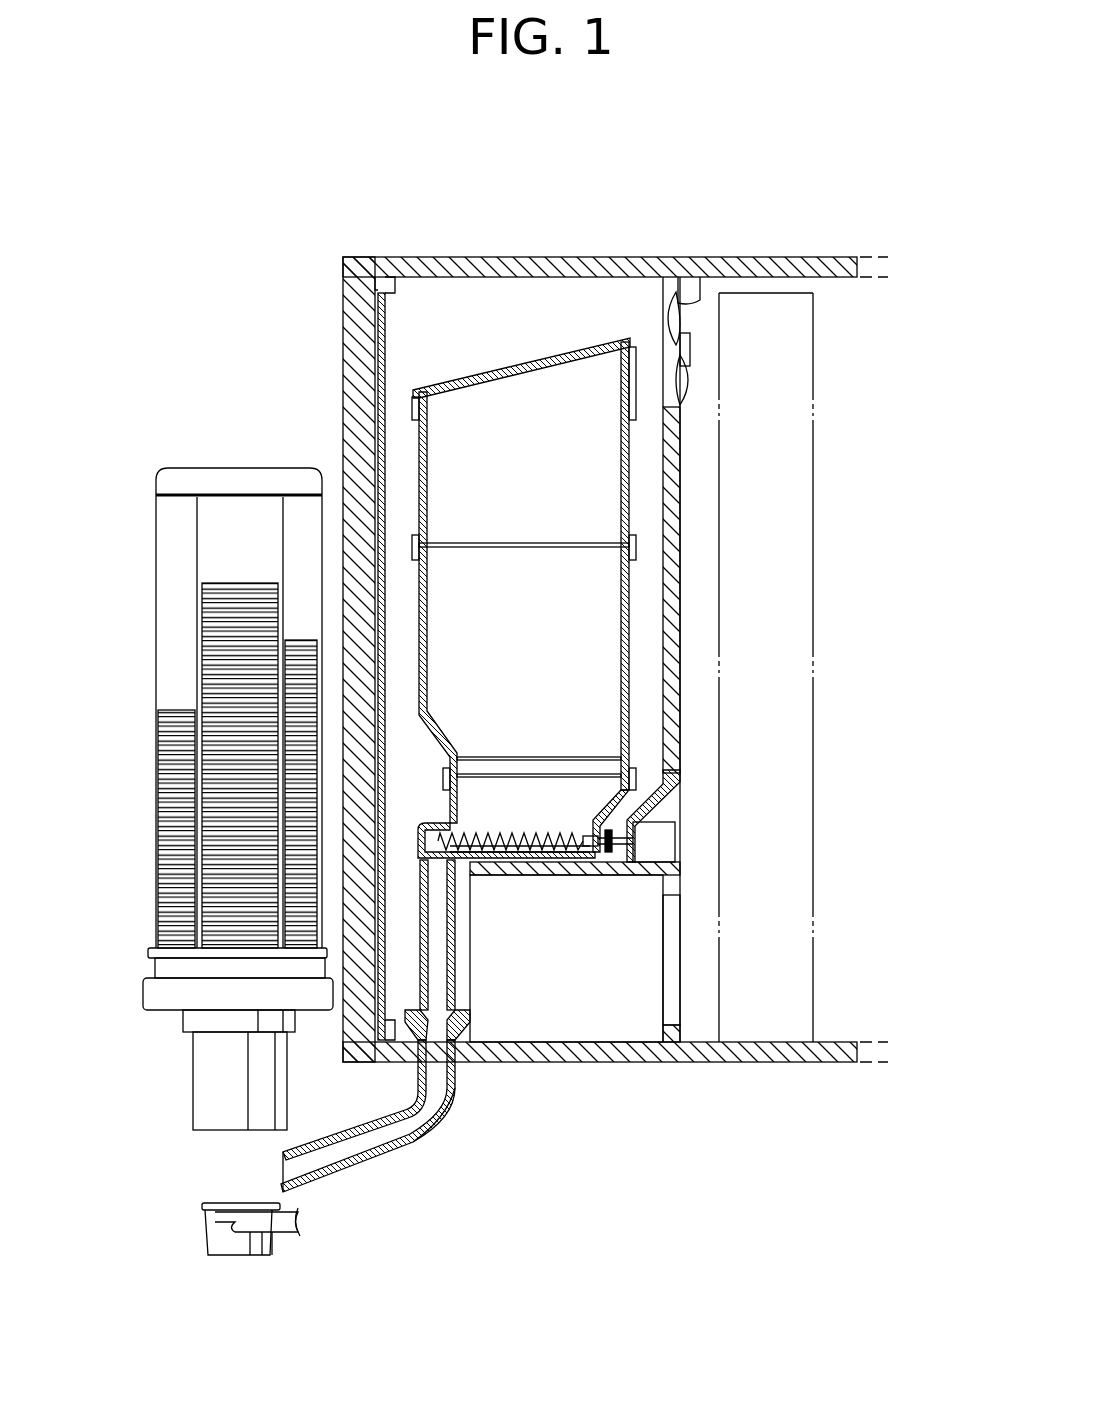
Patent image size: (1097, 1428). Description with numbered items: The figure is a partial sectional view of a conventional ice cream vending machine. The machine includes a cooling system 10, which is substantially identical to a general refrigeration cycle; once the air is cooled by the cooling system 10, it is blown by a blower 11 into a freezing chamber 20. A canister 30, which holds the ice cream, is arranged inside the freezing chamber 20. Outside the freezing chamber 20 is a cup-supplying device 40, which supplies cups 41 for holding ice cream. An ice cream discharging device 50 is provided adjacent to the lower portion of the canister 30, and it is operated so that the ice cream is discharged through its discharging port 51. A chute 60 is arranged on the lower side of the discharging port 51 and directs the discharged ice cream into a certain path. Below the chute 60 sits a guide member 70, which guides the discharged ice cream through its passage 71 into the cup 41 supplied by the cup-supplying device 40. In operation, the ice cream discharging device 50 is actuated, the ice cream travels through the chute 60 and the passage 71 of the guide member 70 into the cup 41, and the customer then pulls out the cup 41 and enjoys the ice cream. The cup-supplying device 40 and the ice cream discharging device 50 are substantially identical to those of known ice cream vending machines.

The cooling system 10 is at (826, 586).
The blower 11 is at (694, 300).
The freezing chamber 20 is at (548, 271).
The canister 30 is at (623, 662).
The cup-supplying device 40 is at (134, 719).
The cup 41 is at (215, 1233).
The ice cream discharging device 50 is at (548, 862).
The discharging port 51 is at (437, 850).
The chute 60 is at (455, 958).
The guide member 70 is at (388, 1160).
The passage 71 is at (410, 1140).